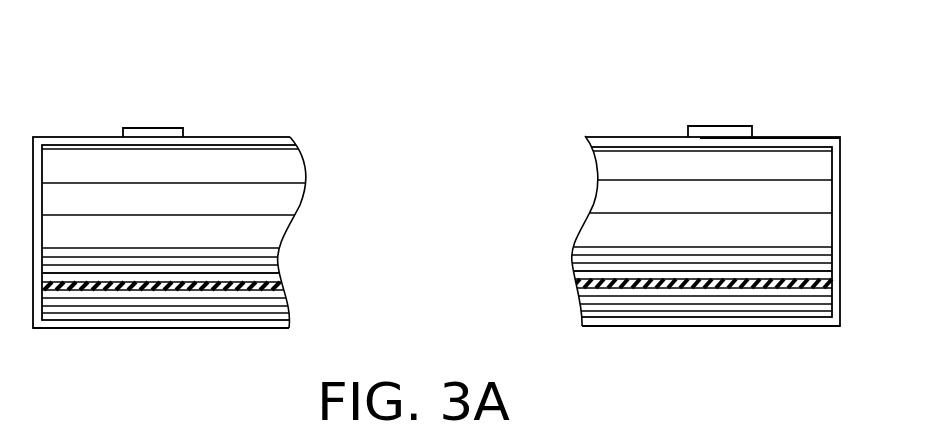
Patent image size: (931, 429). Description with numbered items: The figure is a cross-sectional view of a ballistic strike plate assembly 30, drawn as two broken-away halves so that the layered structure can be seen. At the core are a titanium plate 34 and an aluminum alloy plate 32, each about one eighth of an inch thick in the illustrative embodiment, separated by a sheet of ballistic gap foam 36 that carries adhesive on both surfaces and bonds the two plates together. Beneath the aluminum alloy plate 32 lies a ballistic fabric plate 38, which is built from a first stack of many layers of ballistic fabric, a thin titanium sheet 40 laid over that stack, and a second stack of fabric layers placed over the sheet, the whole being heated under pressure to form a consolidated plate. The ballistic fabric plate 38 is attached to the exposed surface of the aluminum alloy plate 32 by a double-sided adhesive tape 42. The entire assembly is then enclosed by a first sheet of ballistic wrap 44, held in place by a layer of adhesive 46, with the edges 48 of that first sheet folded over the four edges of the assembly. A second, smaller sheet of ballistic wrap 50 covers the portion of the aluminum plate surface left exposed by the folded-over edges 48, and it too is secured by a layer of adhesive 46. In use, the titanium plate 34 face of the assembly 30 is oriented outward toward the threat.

The ballistic strike plate assembly 30 is at (763, 64).
The aluminum alloy plate 32 is at (247, 242).
The titanium plate 34 is at (247, 176).
The ballistic gap foam sheet 36 is at (247, 209).
The ballistic fabric plate 38 is at (437, 256).
The titanium sheet 40 is at (280, 283).
The double-sided adhesive tape 42 is at (286, 256).
The first sheet of ballistic wrap 44 is at (168, 330).
The layer of adhesive 46 is at (296, 146).
The edges of first sheet of ballistic wrap 48 is at (87, 137).
The second sheet of ballistic wrap 50 is at (215, 128).